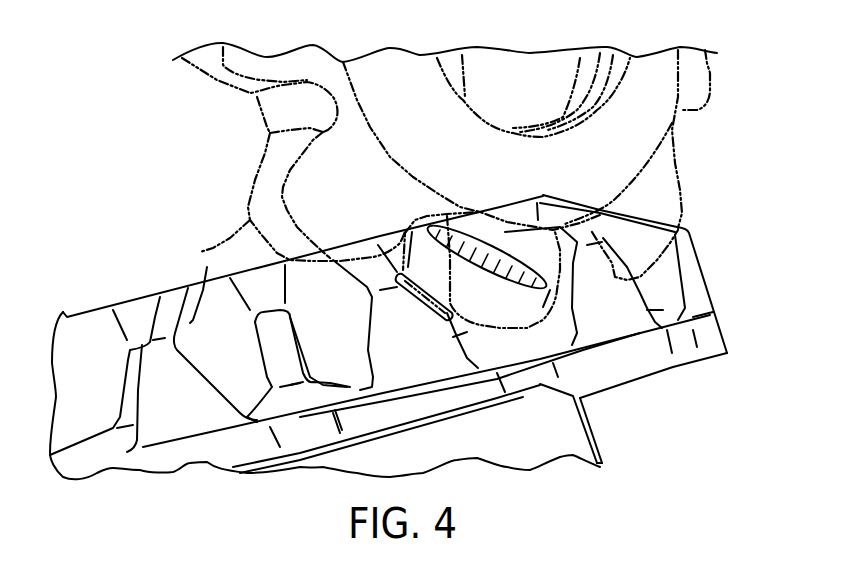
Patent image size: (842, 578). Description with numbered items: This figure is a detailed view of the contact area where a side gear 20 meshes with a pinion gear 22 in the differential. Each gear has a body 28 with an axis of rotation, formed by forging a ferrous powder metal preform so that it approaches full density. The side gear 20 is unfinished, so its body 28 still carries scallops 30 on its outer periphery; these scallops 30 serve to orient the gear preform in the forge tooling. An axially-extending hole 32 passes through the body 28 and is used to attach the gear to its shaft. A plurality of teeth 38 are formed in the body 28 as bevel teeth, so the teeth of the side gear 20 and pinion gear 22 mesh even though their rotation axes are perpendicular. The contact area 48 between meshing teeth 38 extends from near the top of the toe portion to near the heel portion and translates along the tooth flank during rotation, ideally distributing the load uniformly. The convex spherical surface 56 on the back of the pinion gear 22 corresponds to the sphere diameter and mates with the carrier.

The side gear 20 is at (110, 299).
The pinion gear 22 is at (248, 151).
The body 28 is at (660, 173).
The scallops 30 is at (313, 437).
The axially-extending hole 32 is at (527, 74).
The teeth 38 is at (207, 267).
The contact area 48 is at (501, 258).
The convex spherical surface 56 is at (692, 74).